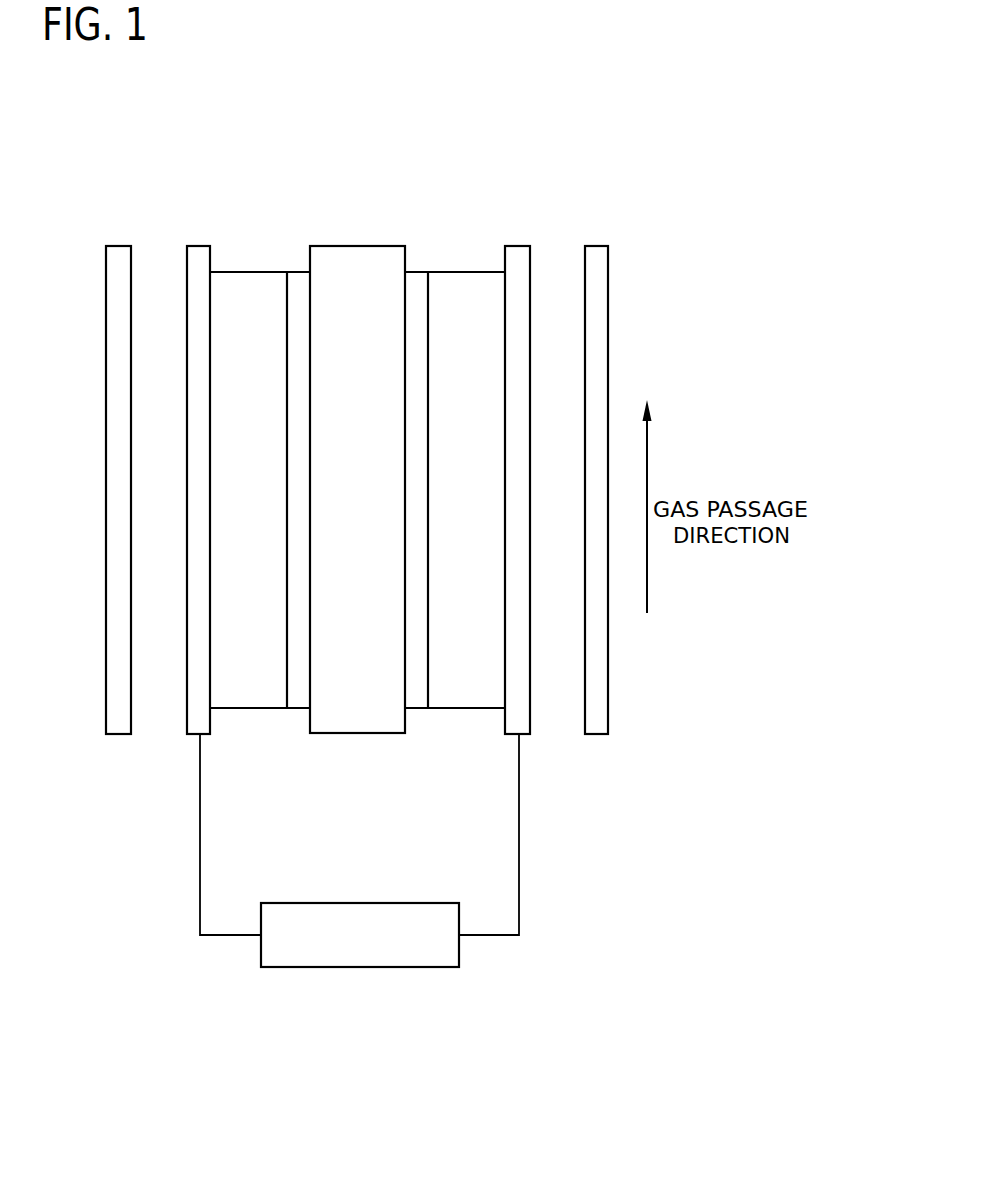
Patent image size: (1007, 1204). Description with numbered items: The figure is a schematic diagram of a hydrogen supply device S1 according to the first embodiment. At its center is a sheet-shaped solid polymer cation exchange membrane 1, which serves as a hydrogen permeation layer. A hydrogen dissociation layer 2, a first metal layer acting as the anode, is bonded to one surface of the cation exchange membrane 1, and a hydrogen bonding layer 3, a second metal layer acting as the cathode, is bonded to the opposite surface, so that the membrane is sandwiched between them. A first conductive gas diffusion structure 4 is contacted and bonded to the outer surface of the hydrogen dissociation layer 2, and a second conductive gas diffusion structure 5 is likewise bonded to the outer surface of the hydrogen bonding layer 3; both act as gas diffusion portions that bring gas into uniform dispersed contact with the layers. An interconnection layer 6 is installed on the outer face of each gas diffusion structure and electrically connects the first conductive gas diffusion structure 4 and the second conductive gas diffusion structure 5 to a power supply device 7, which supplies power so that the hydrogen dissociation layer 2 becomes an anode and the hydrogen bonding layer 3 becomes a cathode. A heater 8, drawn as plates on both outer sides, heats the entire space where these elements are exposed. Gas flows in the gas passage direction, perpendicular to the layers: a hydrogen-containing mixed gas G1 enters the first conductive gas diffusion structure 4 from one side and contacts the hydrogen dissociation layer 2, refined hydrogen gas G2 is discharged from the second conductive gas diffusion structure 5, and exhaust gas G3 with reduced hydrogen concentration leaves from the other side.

The hydrogen supply device S1 is at (606, 146).
The cation exchange membrane 1 is at (368, 712).
The hydrogen dissociation layer 2 is at (422, 285).
The hydrogen bonding layer 3 is at (303, 285).
The first conductive gas diffusion structure 4 is at (487, 283).
The second conductive gas diffusion structure 5 is at (250, 692).
The interconnection layer 6 is at (192, 375).
The power supply device 7 is at (419, 967).
The heater 8 is at (115, 685).
The mixed gas G1 is at (468, 740).
The hydrogen gas G2 is at (250, 250).
The exhaust gas G3 is at (467, 250).